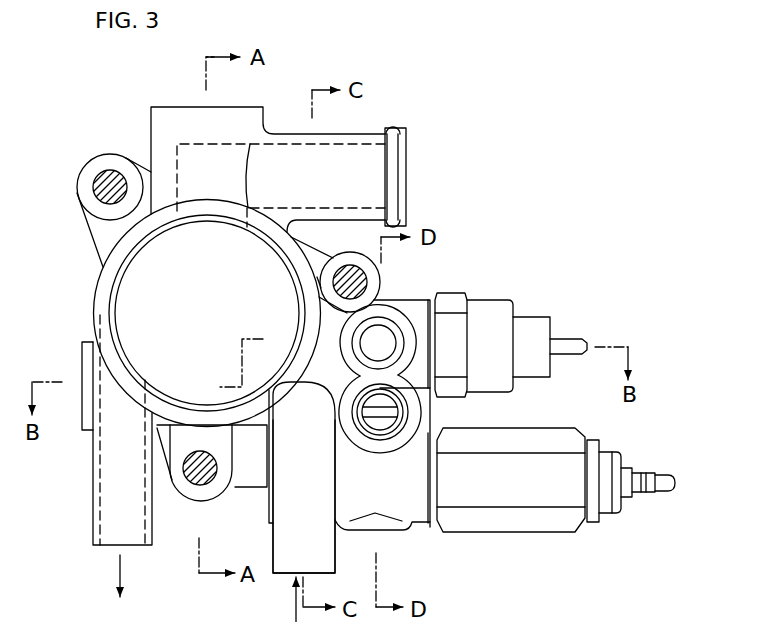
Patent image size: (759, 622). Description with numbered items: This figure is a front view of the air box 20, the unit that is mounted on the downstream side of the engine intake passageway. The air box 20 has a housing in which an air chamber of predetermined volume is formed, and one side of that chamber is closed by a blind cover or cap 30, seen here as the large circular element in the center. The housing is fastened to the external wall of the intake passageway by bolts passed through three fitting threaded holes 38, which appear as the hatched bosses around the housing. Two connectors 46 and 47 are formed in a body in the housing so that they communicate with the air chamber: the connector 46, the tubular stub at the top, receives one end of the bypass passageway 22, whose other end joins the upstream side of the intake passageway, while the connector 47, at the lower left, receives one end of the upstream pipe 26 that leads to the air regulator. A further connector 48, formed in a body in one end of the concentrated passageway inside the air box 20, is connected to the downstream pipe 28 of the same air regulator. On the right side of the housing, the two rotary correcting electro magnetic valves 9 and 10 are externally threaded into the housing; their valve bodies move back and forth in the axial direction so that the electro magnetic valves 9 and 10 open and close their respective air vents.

The rotary correcting electro magnetic valve 9 is at (492, 310).
The rotary correcting electro magnetic valve 10 is at (497, 523).
The air box 20 is at (357, 130).
The bypass passageway 22 is at (410, 176).
The upstream pipe 26 is at (126, 588).
The downstream pipe 28 is at (107, 170).
The blind cover or cap 30 is at (131, 338).
The fitting threaded holes 38 is at (358, 282).
The connector 46 is at (362, 155).
The connector 47 is at (115, 506).
The connector 48 is at (332, 548).